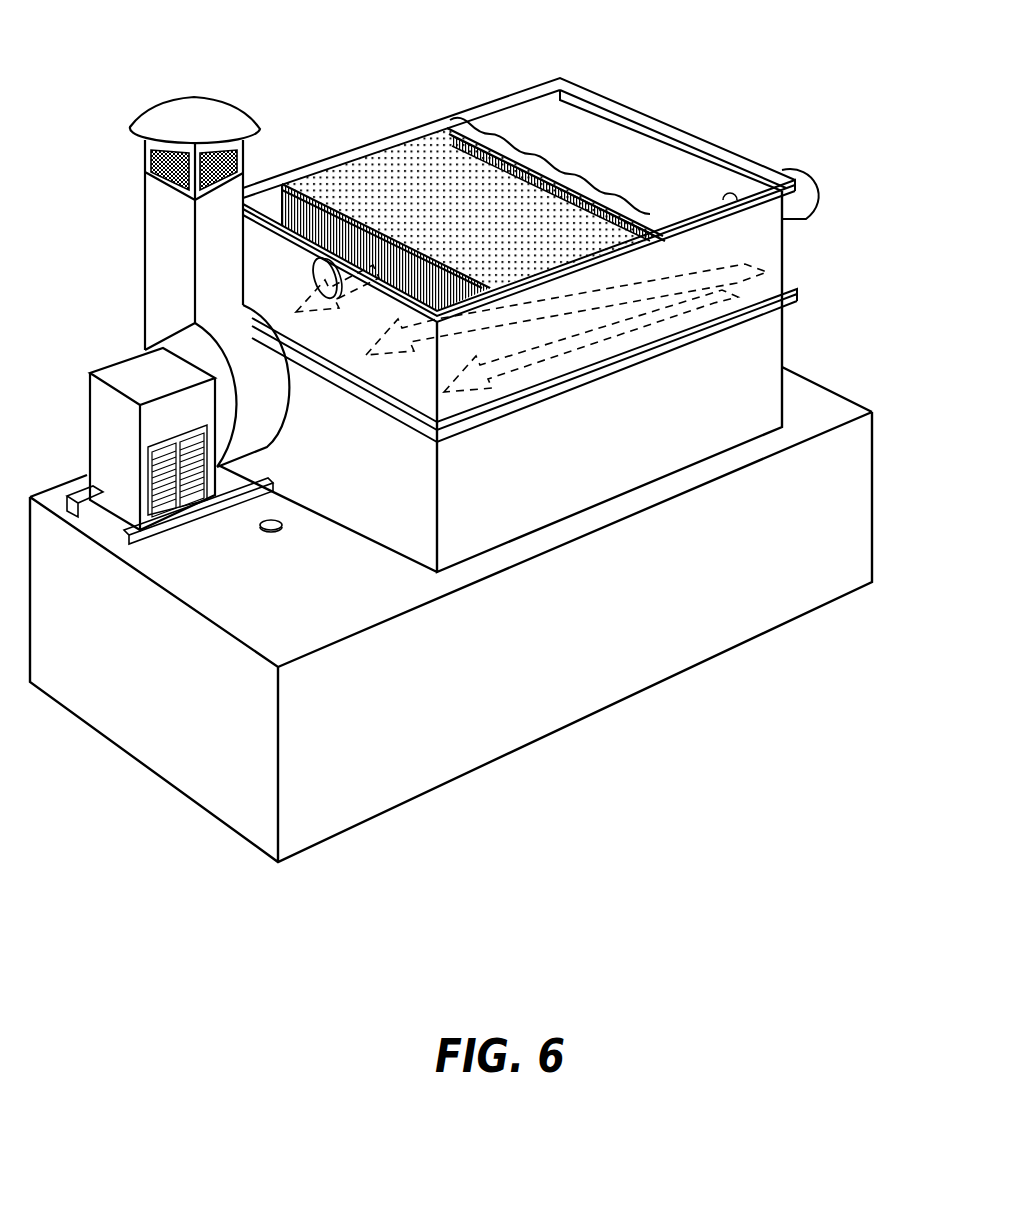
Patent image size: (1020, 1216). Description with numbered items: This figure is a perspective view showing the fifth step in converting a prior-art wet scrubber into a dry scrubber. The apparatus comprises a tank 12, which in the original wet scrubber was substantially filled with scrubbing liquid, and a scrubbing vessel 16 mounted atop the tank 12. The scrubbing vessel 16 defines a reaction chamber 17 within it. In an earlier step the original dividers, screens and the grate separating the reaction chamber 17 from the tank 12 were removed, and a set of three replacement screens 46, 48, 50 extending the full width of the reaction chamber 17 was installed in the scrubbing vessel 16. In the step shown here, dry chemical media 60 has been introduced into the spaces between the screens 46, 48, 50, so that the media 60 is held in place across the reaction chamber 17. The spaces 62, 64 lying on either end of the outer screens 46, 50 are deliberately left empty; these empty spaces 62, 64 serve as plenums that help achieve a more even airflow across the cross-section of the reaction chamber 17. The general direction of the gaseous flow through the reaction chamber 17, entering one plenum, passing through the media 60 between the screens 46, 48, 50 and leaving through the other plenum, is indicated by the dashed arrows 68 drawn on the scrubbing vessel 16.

The tank 12 is at (658, 605).
The scrubbing vessel 16 is at (783, 352).
The reaction chamber 17 is at (662, 156).
The replacement screen 46 is at (500, 113).
The replacement screen 48 is at (453, 135).
The replacement screen 50 is at (285, 182).
The dry chemical media 60 is at (410, 157).
The space 62 is at (593, 130).
The space 64 is at (273, 210).
The dashed arrows 68 is at (800, 292).